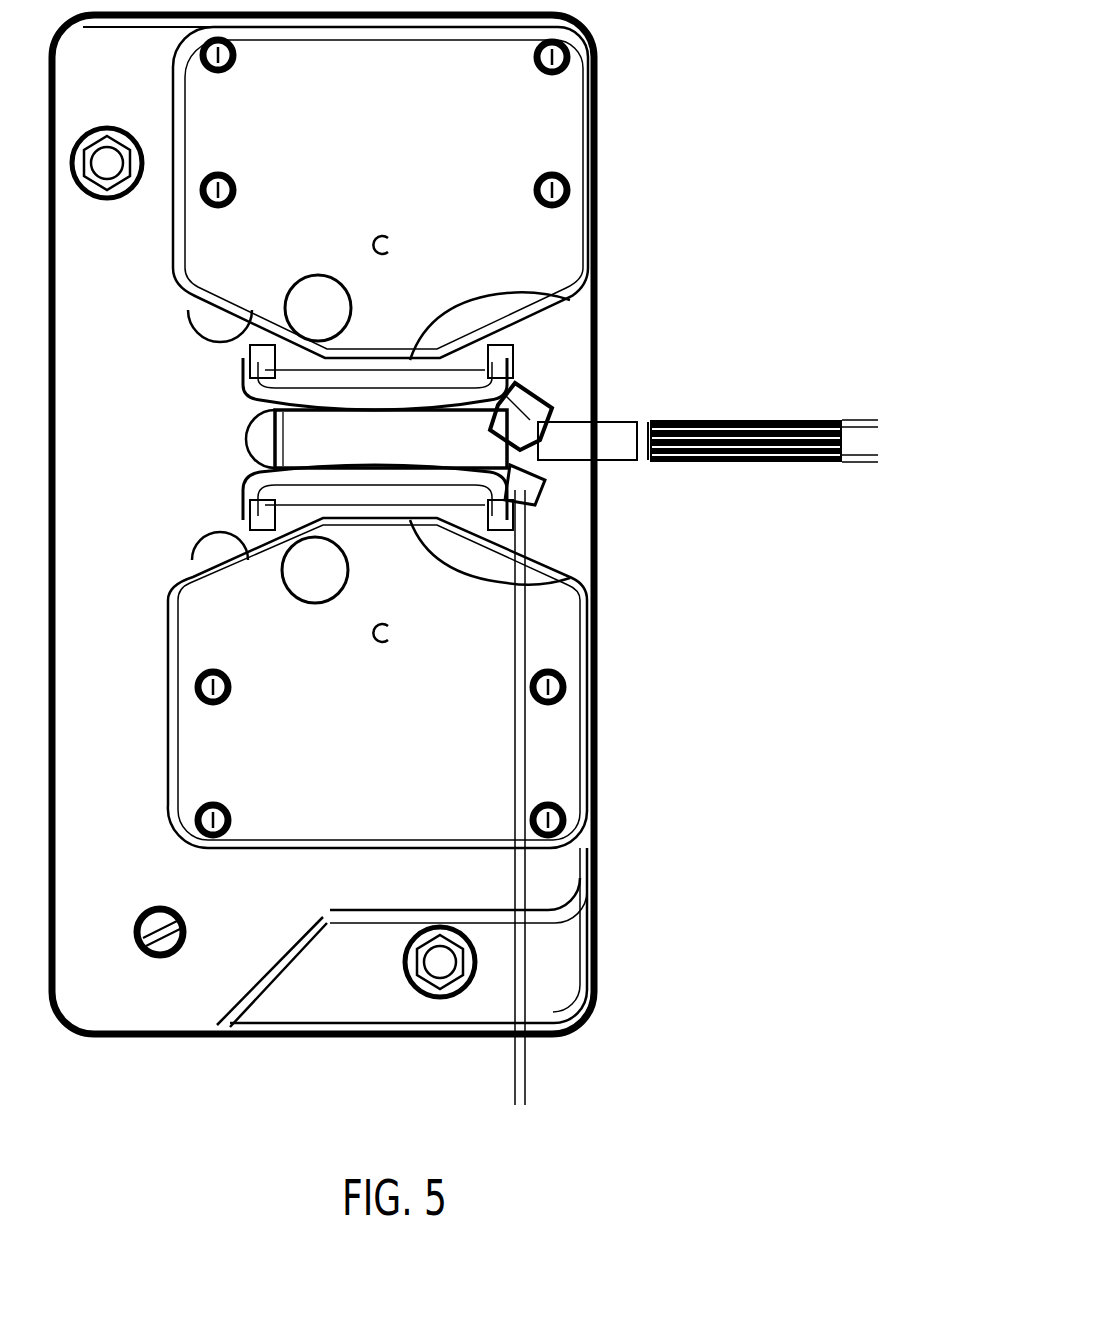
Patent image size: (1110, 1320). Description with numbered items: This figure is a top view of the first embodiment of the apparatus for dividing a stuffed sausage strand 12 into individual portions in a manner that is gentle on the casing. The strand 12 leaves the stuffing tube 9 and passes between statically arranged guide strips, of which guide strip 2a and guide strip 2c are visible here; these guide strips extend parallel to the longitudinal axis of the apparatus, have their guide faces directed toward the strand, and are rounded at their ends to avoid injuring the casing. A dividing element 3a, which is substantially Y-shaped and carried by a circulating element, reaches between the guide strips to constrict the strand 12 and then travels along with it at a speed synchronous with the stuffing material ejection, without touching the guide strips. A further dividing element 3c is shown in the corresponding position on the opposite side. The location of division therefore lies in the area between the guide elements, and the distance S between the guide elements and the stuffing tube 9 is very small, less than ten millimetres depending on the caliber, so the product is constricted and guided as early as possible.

The guide strip 2a is at (384, 398).
The guide strip 2c is at (520, 507).
The dividing element 3a is at (538, 405).
The lower clamp member 3c is at (528, 497).
The stuffing tube 9 is at (791, 420).
The stuffed sausage strand 12 is at (252, 432).
The distance S is at (553, 1098).